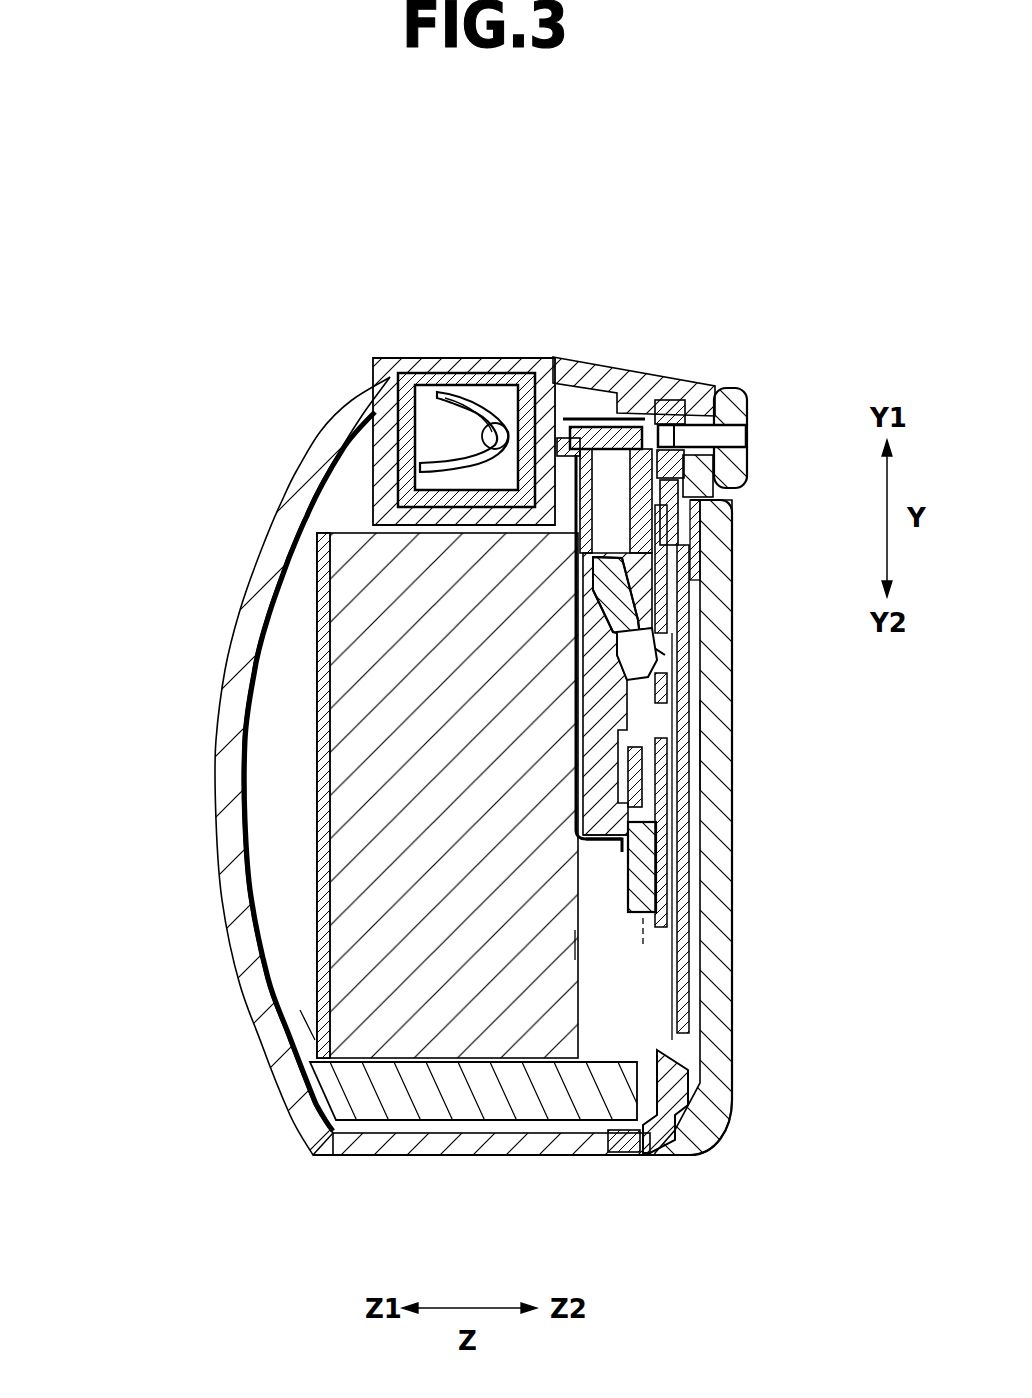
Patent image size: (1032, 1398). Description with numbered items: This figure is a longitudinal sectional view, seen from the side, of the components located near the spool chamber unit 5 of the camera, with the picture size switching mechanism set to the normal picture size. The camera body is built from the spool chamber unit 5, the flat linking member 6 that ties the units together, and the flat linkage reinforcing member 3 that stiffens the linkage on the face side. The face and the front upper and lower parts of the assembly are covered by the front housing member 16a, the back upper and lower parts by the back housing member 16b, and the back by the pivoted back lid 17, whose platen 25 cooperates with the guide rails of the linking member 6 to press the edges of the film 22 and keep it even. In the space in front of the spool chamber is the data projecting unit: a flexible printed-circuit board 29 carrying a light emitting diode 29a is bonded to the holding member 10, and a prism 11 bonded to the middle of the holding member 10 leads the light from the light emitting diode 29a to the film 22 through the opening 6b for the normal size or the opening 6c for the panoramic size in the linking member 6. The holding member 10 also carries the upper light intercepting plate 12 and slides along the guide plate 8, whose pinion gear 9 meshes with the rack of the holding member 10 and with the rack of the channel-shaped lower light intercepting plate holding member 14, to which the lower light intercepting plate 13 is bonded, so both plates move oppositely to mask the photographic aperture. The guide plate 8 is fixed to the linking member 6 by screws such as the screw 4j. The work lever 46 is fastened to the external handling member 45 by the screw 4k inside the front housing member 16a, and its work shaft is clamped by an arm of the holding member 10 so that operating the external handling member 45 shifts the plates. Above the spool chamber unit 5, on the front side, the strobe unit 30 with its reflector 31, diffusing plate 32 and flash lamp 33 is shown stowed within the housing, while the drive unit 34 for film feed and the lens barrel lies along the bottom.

The linkage reinforcing member 3 is at (320, 679).
The spool chamber unit 5 is at (357, 535).
The linking member 6 is at (590, 1157).
The opening 6b is at (660, 652).
The opening 6c is at (657, 723).
The guide plate 8 is at (258, 1024).
The pinion gear 9 is at (603, 860).
The holding member 10 is at (620, 838).
The prism 11 is at (617, 593).
The upper light intercepting plate 12 is at (640, 567).
The lower light intercepting plate 13 is at (665, 836).
The lower light intercepting plate holding member 14 is at (573, 958).
The front housing member 16a is at (267, 517).
The back housing member 16b is at (645, 375).
The back lid 17 is at (713, 745).
The film 22 is at (680, 865).
The platen 25 is at (690, 1012).
The flexible printed-circuit board 29 is at (620, 425).
The light emitting diode 29a is at (563, 357).
The strobe unit 30 is at (500, 357).
The reflector 31 is at (462, 410).
The diffusing plate 32 is at (405, 400).
The flash lamp 33 is at (437, 396).
The drive unit 34 is at (410, 1112).
The external handling member 45 is at (748, 388).
The work lever 46 is at (668, 400).
The screw 4j is at (550, 1135).
The screw 4k is at (717, 440).